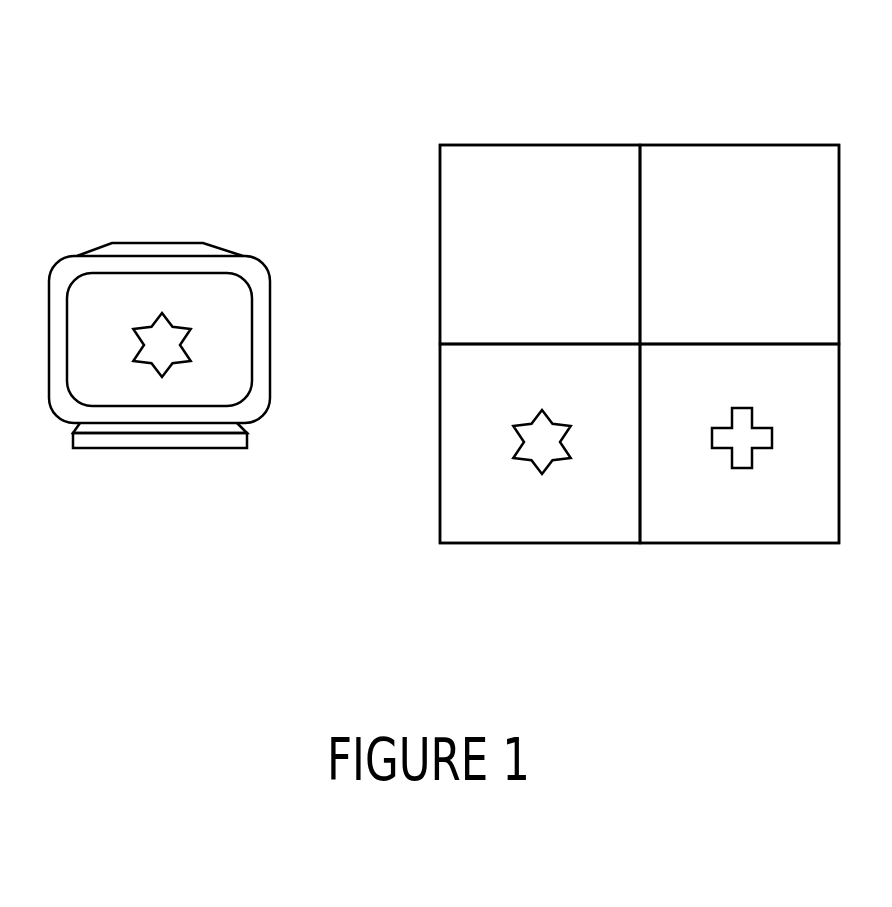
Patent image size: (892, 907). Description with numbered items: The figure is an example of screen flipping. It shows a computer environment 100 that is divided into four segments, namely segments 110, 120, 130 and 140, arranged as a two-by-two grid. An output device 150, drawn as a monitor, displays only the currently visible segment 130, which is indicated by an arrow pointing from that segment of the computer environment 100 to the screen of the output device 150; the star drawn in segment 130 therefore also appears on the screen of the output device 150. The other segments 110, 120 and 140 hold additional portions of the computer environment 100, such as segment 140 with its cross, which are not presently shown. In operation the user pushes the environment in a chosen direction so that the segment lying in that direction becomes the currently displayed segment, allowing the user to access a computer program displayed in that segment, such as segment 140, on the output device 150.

The computer environment 100 is at (477, 125).
The segment 110 is at (540, 244).
The segment 120 is at (739, 244).
The currently visible segment 130 is at (540, 443).
The segment 140 is at (739, 443).
The output device 150 is at (468, 477).